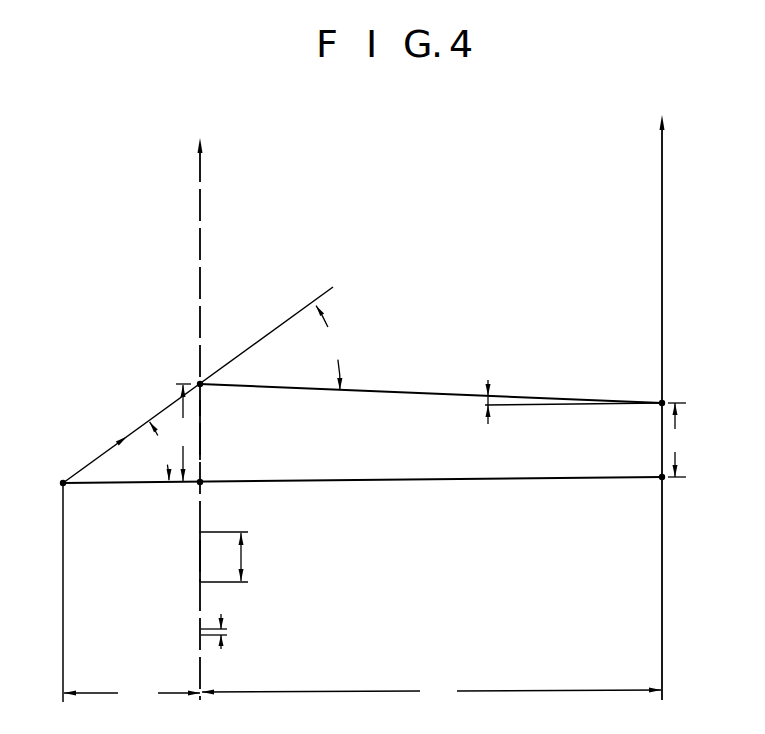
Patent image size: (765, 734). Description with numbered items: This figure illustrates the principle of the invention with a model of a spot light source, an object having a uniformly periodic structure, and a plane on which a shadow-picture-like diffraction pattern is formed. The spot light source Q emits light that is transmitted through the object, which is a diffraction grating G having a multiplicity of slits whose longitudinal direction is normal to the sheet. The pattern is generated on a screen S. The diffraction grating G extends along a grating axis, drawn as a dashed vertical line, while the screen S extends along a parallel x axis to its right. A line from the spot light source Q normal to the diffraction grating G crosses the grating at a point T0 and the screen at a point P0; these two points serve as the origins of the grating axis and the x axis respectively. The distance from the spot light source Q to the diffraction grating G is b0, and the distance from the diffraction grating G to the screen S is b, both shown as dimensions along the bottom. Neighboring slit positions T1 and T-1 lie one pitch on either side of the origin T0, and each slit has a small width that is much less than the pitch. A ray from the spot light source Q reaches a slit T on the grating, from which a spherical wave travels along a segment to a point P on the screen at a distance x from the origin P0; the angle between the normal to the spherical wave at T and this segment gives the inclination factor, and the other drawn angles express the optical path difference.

The diffraction grating G is at (201, 208).
The screen S is at (663, 204).
The spot light source Q is at (63, 473).
The slit T is at (189, 374).
The point T0 is at (207, 470).
The point T1 is at (202, 431).
The point P is at (667, 396).
The point P0 is at (670, 485).
The x axis coordinate x is at (671, 285).
The point T-1 is at (226, 546).
The distance b0 is at (132, 694).
The distance b is at (431, 691).